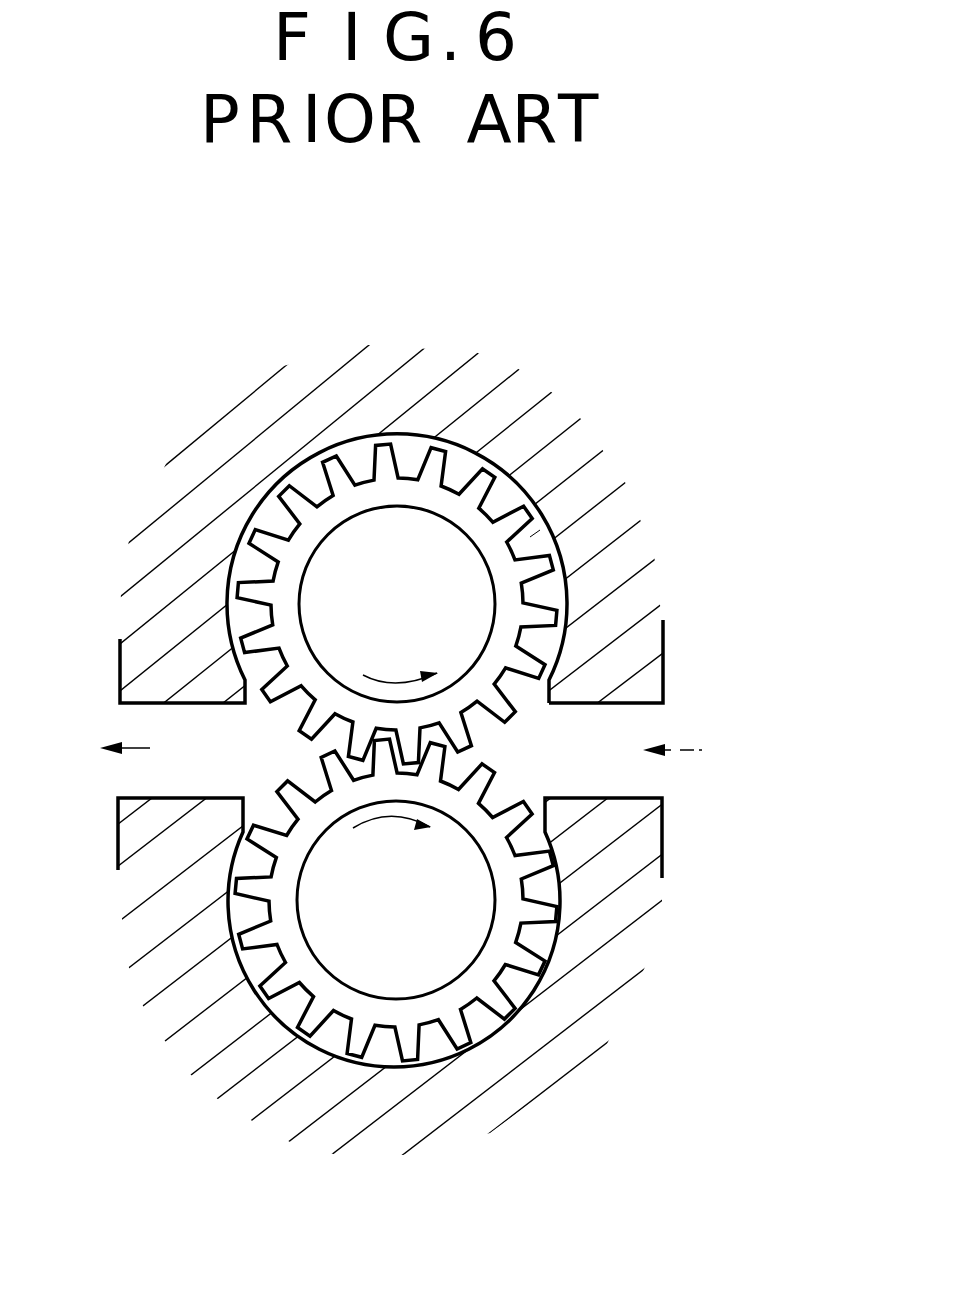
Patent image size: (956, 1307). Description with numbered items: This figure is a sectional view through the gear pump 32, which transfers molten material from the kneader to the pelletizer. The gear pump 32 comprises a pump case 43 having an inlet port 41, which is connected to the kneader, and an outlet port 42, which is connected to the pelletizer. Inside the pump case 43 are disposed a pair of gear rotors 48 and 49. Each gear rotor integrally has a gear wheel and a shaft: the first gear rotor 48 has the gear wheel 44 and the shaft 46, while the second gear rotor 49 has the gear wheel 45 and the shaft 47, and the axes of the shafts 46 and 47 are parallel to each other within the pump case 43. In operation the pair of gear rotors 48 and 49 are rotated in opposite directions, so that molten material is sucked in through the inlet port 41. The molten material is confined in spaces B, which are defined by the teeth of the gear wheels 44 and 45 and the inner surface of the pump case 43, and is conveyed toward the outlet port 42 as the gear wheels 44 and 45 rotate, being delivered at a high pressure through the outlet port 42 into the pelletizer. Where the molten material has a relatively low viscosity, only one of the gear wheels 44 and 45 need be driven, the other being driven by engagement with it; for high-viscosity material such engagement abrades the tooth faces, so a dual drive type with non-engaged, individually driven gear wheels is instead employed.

The gear pump 32 is at (590, 425).
The inlet port 41 is at (633, 770).
The outlet port 42 is at (136, 796).
The pump case 43 is at (665, 647).
The gear wheel 44 is at (400, 454).
The gear wheel 45 is at (417, 1044).
The shaft 46 is at (453, 523).
The shaft 47 is at (457, 979).
The gear rotor 48 is at (552, 305).
The gear rotor 49 is at (550, 1207).
The spaces B is at (530, 537).